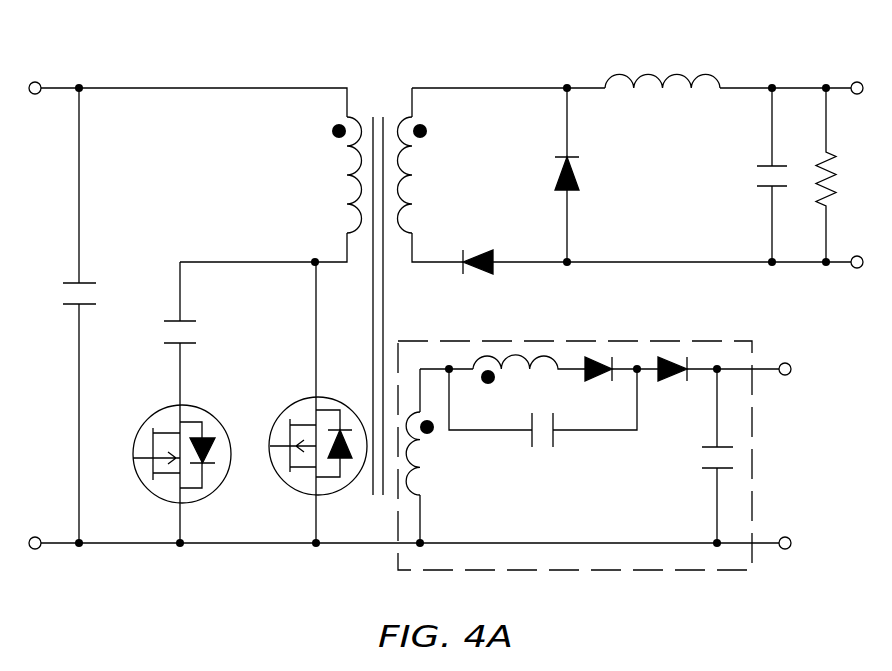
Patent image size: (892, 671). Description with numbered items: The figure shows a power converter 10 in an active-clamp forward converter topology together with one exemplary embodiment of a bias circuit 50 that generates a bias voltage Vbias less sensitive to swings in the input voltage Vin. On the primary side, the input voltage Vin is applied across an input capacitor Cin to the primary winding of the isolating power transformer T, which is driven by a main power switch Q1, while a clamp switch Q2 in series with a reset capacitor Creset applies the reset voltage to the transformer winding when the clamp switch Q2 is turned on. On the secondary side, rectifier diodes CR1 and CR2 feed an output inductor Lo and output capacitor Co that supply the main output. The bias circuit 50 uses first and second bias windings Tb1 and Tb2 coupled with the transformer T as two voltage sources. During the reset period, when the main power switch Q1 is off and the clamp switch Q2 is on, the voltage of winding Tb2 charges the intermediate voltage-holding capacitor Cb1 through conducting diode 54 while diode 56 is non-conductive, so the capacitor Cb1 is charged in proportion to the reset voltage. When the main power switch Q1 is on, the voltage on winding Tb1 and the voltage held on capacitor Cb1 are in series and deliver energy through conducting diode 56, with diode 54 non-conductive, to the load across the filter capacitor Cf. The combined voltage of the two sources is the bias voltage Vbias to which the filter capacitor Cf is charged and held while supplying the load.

The input voltage Vin is at (38, 82).
The power converter 10 is at (322, 43).
The power transformer T is at (395, 80).
The output inductor Lo is at (648, 72).
The output capacitor Co is at (762, 166).
The freewheeling rectifier diode CR2 is at (578, 180).
The forward rectifier diode CR1 is at (470, 250).
The input capacitor Cin is at (88, 283).
The reset capacitor Creset is at (188, 320).
The clamp switch Q2 is at (163, 412).
The main power switch Q1 is at (283, 410).
The bias circuit 50 is at (752, 457).
The first bias winding Tb1 is at (425, 492).
The second bias winding Tb2 is at (517, 355).
The diode 54 is at (598, 358).
The diode 56 is at (672, 358).
The bias voltage Vbias is at (835, 369).
The filter capacitor Cf is at (706, 446).
The intermediate voltage-holding capacitor Cb1 is at (555, 445).